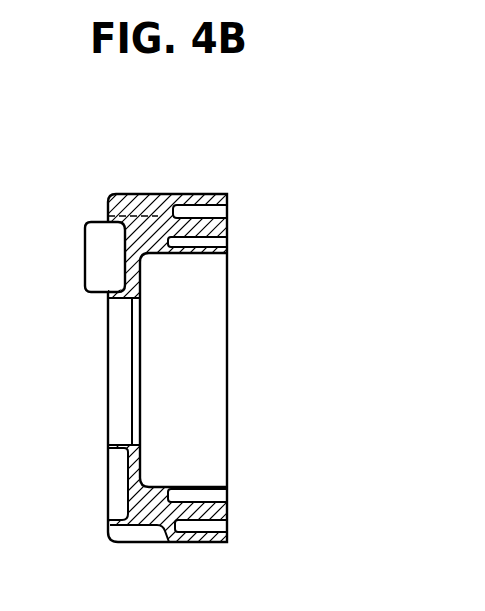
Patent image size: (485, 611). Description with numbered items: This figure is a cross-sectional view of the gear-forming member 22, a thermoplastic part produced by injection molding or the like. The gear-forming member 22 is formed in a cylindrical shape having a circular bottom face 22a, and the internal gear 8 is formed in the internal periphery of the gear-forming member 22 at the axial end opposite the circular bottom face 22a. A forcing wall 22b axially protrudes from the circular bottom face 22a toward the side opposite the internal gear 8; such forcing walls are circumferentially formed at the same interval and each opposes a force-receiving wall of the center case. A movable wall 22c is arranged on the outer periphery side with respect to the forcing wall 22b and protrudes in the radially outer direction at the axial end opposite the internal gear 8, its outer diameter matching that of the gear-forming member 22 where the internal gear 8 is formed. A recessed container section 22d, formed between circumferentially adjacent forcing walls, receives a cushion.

The gear-forming member 22 is at (200, 194).
The circular bottom face 22a is at (138, 275).
The forcing wall 22b is at (88, 258).
The movable wall 22c is at (142, 216).
The recessed container section 22d is at (123, 493).
The internal gear 8 is at (190, 250).